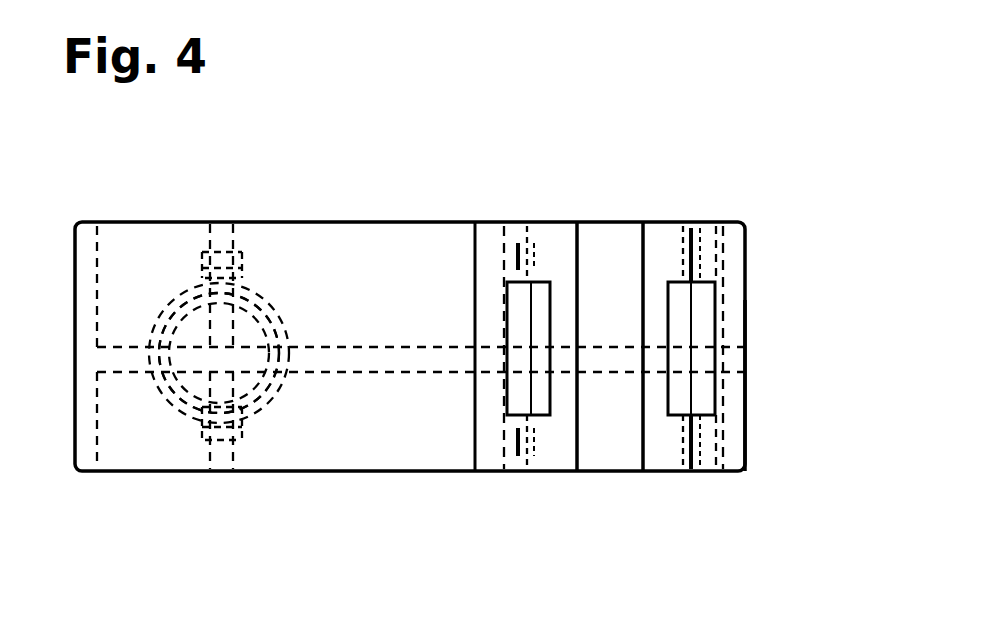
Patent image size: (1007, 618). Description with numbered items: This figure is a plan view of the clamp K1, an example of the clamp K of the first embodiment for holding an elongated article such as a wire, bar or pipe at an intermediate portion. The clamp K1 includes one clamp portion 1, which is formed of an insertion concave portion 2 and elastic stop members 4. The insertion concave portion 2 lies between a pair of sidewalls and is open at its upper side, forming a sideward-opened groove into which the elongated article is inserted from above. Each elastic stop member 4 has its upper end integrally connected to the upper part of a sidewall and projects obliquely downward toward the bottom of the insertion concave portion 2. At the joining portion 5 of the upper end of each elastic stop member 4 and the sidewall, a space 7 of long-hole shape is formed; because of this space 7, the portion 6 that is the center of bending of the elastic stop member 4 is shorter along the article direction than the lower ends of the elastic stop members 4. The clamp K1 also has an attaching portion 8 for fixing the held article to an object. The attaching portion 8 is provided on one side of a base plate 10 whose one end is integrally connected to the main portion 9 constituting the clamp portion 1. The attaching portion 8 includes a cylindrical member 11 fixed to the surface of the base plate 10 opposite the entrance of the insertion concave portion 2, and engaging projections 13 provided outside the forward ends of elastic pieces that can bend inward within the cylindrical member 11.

The clamp portion 1 is at (595, 208).
The insertion concave portion 2 is at (613, 412).
The elastic stop member 4 is at (568, 252).
The joining portion 5 is at (520, 440).
The portion which is a center of bending 6 is at (693, 430).
The space 7 is at (510, 335).
The attaching portion 8 is at (276, 390).
The main portion 9 is at (737, 417).
The base plate 10 is at (305, 245).
The cylindrical member 11 is at (285, 372).
The engaging projection 13 is at (200, 255).
The clamp K is at (462, 281).
The clamp K1 is at (740, 195).